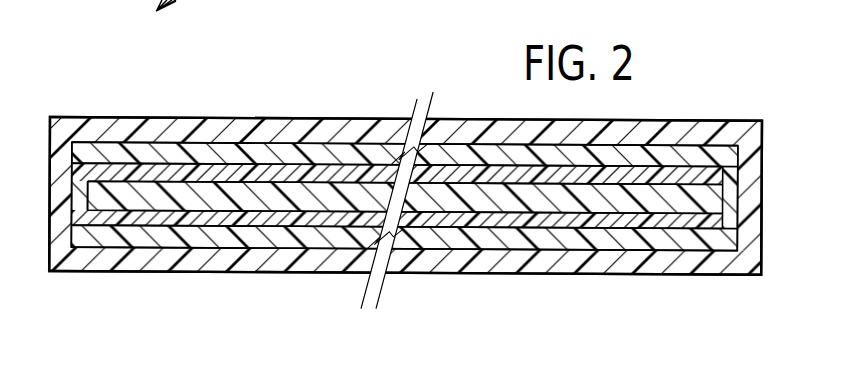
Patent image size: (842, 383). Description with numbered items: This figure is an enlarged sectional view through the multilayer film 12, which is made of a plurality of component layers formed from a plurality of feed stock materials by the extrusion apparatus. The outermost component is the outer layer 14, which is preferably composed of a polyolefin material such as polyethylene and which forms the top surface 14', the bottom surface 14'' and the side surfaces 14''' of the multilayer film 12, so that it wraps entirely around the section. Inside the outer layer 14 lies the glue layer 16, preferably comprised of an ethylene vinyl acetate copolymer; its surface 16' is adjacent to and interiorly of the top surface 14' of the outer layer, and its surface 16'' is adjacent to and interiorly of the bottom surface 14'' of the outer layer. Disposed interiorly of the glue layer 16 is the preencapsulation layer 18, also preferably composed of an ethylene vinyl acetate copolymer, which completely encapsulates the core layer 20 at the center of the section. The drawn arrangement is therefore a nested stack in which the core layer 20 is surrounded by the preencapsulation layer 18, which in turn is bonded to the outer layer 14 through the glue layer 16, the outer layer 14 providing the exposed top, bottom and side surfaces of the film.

The multilayer film 12 is at (720, 74).
The outer layer 14 is at (405, 154).
The top surface 14' is at (406, 100).
The bottom surface 14'' is at (405, 293).
The side surfaces 14''' is at (399, 143).
The glue layer 16 is at (404, 240).
The glue layer surface 16' is at (405, 110).
The glue layer surface 16'' is at (404, 282).
The preencapsulation layer 18 is at (233, 170).
The core layer 20 is at (658, 192).